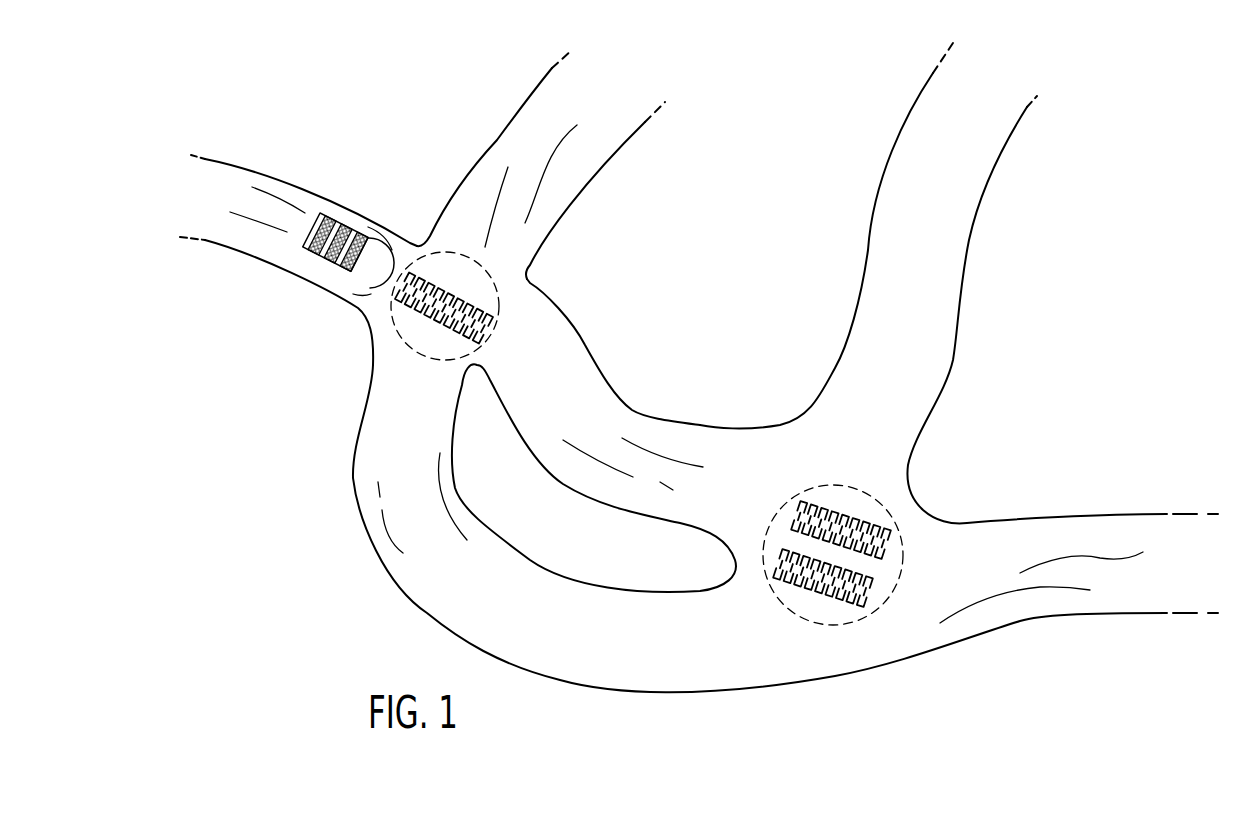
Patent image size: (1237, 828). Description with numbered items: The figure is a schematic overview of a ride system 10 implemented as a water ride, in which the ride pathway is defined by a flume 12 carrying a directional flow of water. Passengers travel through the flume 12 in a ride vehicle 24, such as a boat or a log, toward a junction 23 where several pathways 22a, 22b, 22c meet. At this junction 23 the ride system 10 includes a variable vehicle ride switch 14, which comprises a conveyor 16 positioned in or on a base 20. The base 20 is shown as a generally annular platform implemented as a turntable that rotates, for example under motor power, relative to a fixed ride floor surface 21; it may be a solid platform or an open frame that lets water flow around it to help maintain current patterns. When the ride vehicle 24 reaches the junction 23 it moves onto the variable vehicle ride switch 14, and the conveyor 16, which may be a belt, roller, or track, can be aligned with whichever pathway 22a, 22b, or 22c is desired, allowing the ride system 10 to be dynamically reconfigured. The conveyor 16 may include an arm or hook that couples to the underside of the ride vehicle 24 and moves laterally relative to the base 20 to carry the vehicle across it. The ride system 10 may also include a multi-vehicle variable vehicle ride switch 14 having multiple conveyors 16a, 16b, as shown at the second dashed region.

The ride system 10 is at (293, 432).
The flume 12 is at (281, 268).
The variable vehicle ride switch 14 is at (403, 346).
The conveyor 16 is at (464, 297).
The conveyor 16a is at (815, 597).
The conveyor 16b is at (848, 512).
The base 20 is at (416, 357).
The fixed ride floor surface 21 is at (501, 351).
The pathway 22a is at (440, 436).
The pathway 22b is at (590, 386).
The pathway 22c is at (562, 193).
The junction 23 is at (381, 313).
The ride vehicle 24 is at (343, 221).